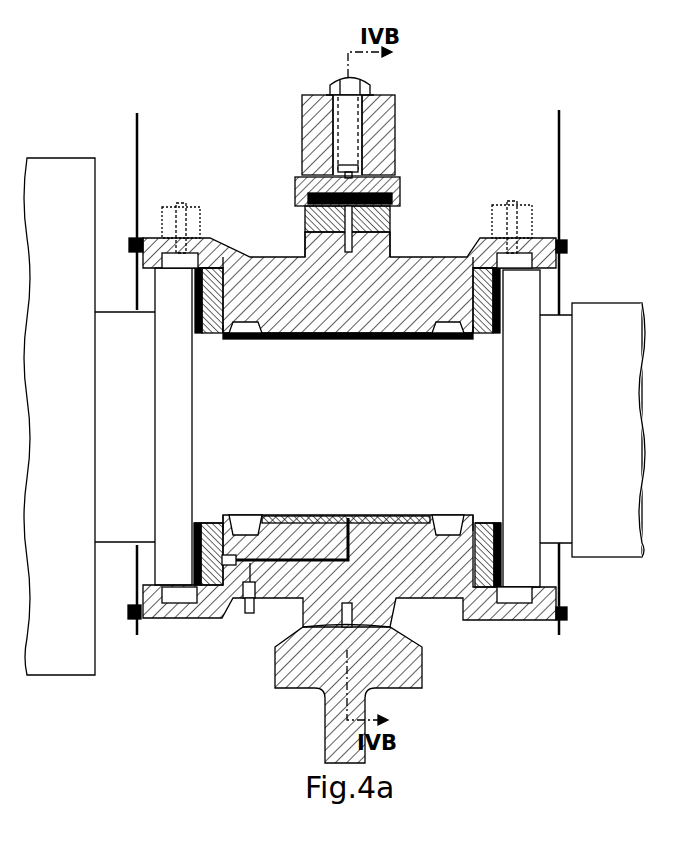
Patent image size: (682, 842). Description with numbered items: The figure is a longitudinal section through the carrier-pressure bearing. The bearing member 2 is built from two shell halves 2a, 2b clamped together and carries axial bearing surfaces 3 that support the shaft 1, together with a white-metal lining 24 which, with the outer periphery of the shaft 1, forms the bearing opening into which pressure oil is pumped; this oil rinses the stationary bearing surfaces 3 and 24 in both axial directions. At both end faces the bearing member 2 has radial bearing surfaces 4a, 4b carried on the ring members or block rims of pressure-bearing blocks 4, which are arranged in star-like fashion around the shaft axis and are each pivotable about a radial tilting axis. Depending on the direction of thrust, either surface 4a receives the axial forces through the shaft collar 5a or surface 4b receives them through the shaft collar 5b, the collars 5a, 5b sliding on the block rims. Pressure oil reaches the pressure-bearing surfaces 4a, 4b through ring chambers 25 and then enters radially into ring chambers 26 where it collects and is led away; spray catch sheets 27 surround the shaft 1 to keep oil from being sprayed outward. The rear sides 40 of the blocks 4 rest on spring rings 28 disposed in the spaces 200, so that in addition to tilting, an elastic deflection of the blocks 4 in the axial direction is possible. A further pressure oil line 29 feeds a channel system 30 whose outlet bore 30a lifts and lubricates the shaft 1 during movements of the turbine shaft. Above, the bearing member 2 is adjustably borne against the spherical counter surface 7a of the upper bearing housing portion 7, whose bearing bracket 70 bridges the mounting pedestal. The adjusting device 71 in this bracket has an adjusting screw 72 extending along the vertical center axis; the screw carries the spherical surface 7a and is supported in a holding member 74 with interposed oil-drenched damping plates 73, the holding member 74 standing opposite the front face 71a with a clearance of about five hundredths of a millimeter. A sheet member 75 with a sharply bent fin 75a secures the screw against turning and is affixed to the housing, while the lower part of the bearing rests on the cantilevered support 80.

The shaft 1 is at (487, 402).
The bearing member 2 is at (349, 433).
The upper bearing shell half 2a is at (290, 267).
The lower bearing shell half 2b is at (445, 585).
The axial bearing surfaces 3 is at (337, 343).
The pressure-bearing blocks 4 is at (391, 398).
The radial bearing surface 4a is at (207, 255).
The radial bearing surface 4b is at (520, 303).
The shaft collar 5a is at (175, 400).
The shaft collar 5b is at (523, 432).
The upper bearing housing portion 7 is at (350, 159).
The upper spherical counter surface 7a is at (391, 236).
The white-metal lining 24 is at (307, 340).
The ring chambers 25 is at (247, 335).
The ring chambers 26 is at (165, 238).
The spray catch sheets 27 is at (137, 130).
The spring rings 28 is at (214, 275).
The pressure oil line 29 is at (248, 613).
The channel system 30 is at (303, 562).
The outlet bore 30a is at (348, 516).
The rear sides 40 is at (232, 262).
The bearing bracket 70 is at (310, 118).
The adjusting device 71 is at (352, 110).
The front face 71a is at (333, 160).
The adjusting screw 72 is at (393, 210).
The damping plates 73 is at (397, 187).
The holding member 74 is at (300, 178).
The sheet member 75 is at (370, 85).
The sharply bent fin 75a is at (333, 92).
The cantilevered support 80 is at (275, 665).
The spaces 200 is at (217, 338).